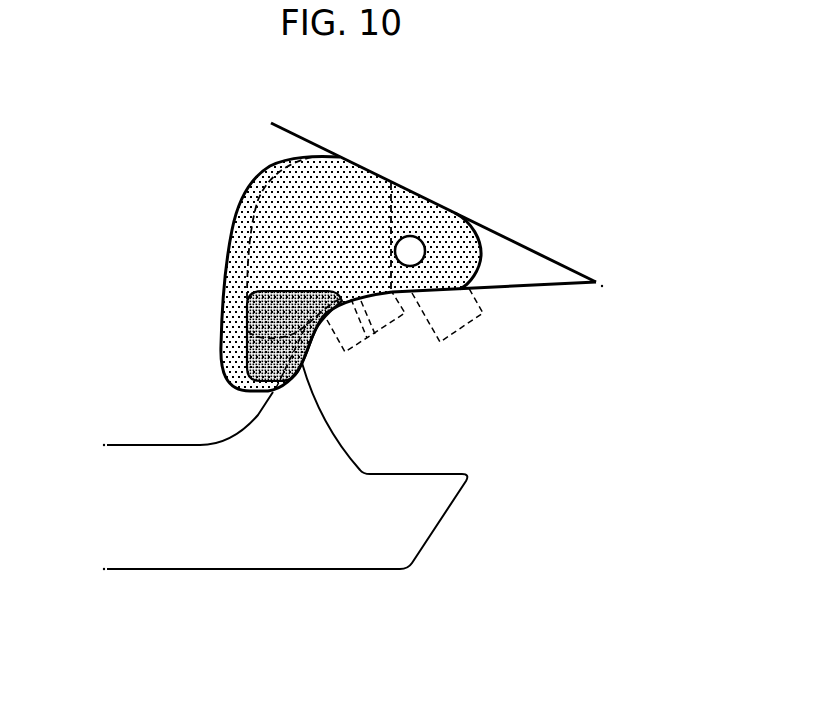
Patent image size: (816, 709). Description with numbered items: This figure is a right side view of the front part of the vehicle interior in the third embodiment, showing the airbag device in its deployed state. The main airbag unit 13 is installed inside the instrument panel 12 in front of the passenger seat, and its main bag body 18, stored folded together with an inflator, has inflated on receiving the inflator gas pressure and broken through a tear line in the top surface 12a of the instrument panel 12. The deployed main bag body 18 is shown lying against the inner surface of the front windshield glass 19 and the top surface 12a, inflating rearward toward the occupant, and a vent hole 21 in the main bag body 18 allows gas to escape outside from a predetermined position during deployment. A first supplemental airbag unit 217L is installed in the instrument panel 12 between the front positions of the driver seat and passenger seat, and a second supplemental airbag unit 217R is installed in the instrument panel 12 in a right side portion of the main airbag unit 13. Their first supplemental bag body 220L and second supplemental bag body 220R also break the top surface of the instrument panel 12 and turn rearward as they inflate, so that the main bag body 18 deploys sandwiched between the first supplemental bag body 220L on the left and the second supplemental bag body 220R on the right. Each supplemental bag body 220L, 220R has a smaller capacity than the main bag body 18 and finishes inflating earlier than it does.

The instrument panel 12 is at (353, 440).
The top surface of the instrument panel 12a is at (525, 285).
The main airbag unit 13 is at (442, 219).
The main bag body 18 is at (457, 238).
The front windshield glass 19 is at (308, 141).
The vent hole 21 is at (415, 242).
The first supplemental bag body 220L is at (396, 180).
The first supplemental airbag unit 217L is at (351, 238).
The second supplemental bag body 220R is at (238, 357).
The second supplemental airbag unit 217R is at (213, 343).